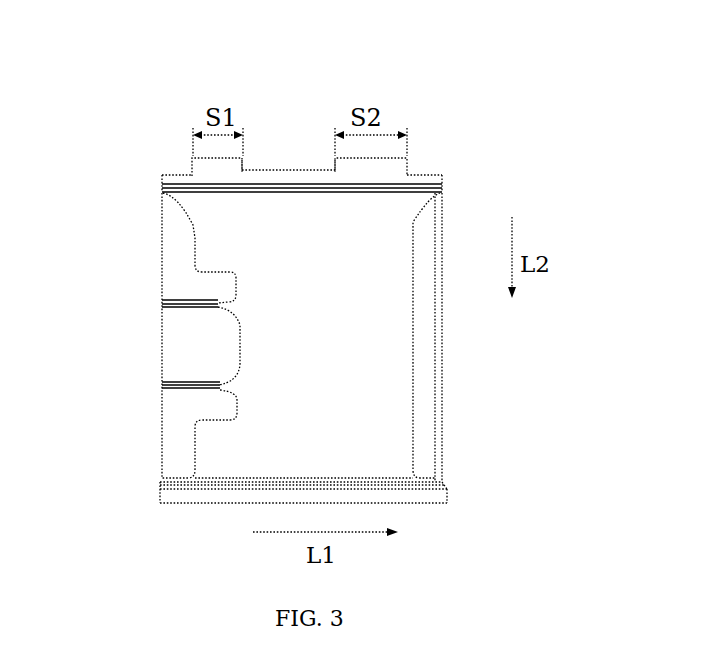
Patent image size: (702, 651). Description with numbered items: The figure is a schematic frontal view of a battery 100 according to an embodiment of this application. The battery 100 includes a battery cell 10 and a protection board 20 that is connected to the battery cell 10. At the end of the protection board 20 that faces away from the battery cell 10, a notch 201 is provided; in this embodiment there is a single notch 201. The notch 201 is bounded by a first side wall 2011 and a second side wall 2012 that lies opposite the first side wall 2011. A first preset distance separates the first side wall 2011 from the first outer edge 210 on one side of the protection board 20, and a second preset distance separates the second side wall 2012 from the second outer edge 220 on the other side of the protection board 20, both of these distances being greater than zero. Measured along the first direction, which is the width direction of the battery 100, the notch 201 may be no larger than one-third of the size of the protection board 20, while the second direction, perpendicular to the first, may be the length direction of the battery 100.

The battery 100 is at (135, 91).
The battery cell 10 is at (388, 341).
The protection board 20 is at (433, 194).
The first outer edge 210 is at (163, 176).
The second outer edge 220 is at (409, 164).
The notch 201 is at (282, 167).
The first side wall 2011 is at (241, 178).
The second side wall 2012 is at (328, 180).